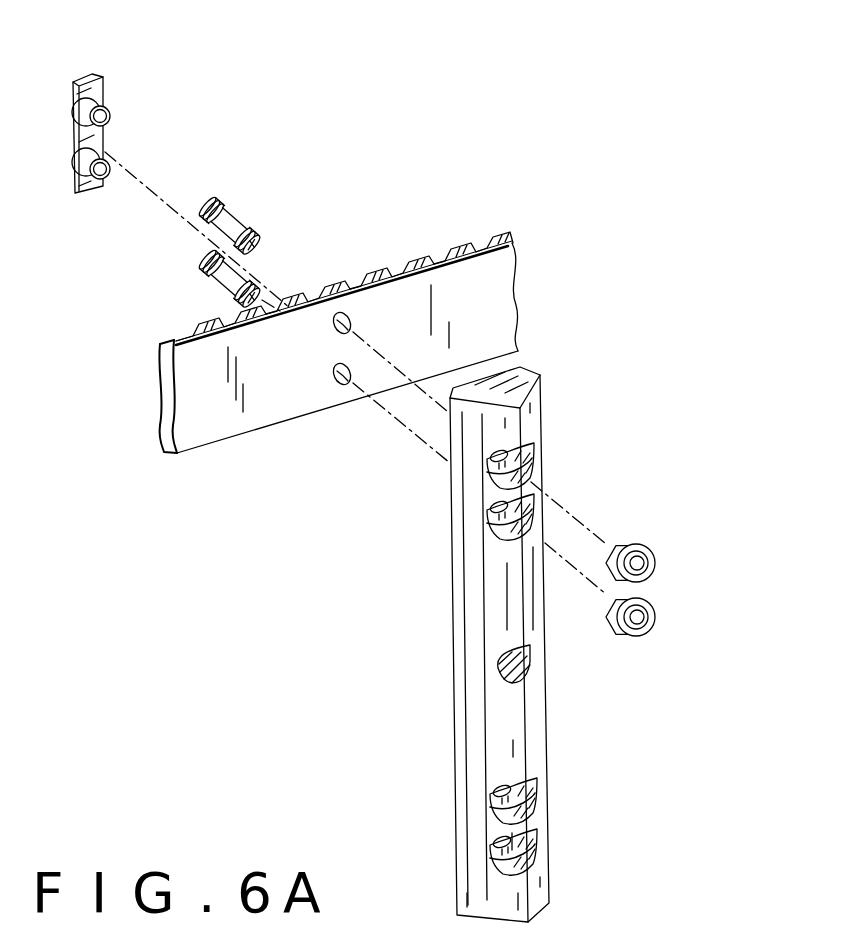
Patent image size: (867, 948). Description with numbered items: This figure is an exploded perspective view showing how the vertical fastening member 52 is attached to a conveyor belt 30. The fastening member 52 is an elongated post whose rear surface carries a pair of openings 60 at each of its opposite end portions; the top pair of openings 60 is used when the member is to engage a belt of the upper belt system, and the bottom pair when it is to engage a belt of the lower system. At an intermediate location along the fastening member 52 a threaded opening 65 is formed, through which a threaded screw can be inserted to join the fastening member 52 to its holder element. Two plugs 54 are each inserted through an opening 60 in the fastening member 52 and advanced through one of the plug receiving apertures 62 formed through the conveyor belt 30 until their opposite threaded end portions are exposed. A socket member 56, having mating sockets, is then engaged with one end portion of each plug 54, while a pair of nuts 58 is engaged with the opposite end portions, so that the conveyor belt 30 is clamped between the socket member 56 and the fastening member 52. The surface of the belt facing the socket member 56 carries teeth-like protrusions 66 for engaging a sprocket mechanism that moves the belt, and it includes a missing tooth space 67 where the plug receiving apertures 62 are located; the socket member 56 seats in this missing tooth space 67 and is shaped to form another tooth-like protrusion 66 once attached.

The conveyor belt 30 is at (195, 430).
The fastening member 52 is at (453, 636).
The plug 54 is at (236, 222).
The socket member 56 is at (90, 76).
The nut 58 is at (645, 540).
The opening 60 is at (538, 462).
The plug receiving aperture 62 is at (351, 322).
The threaded opening 65 is at (530, 670).
The teeth-like protrusion 66 is at (465, 242).
The missing tooth space 67 is at (339, 292).